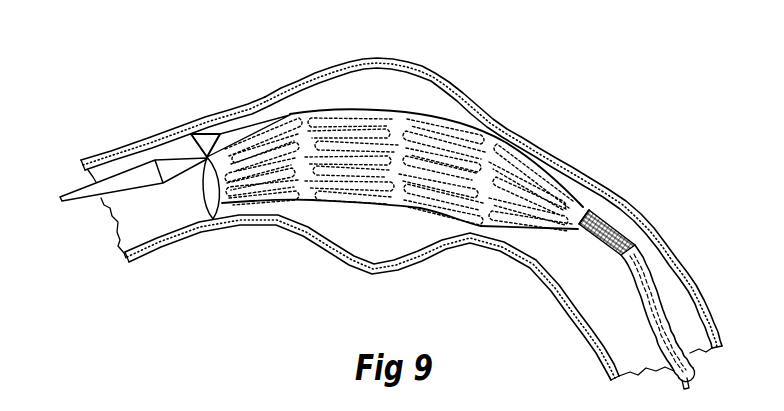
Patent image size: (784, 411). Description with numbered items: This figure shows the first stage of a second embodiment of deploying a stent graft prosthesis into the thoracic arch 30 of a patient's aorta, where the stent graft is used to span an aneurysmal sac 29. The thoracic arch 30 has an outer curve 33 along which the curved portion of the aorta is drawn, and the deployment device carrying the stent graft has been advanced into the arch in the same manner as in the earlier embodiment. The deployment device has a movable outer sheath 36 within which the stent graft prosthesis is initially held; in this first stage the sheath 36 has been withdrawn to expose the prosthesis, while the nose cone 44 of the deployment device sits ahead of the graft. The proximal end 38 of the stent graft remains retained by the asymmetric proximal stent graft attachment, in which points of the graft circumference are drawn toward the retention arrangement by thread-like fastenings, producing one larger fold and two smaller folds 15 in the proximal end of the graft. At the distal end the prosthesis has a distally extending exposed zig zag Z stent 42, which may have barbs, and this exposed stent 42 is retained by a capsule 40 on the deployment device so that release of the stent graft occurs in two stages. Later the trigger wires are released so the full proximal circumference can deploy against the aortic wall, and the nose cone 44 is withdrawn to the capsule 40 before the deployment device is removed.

The smaller fold 15 is at (207, 157).
The aneurysmal sac 29 is at (467, 97).
The thoracic arch 30 is at (204, 232).
The outer curve 33 is at (402, 114).
The outer sheath 36 is at (647, 292).
The proximal end 38 is at (186, 148).
The capsule 40 is at (623, 238).
The exposed zig zag Z stent 42 is at (577, 223).
The nose cone 44 is at (137, 177).